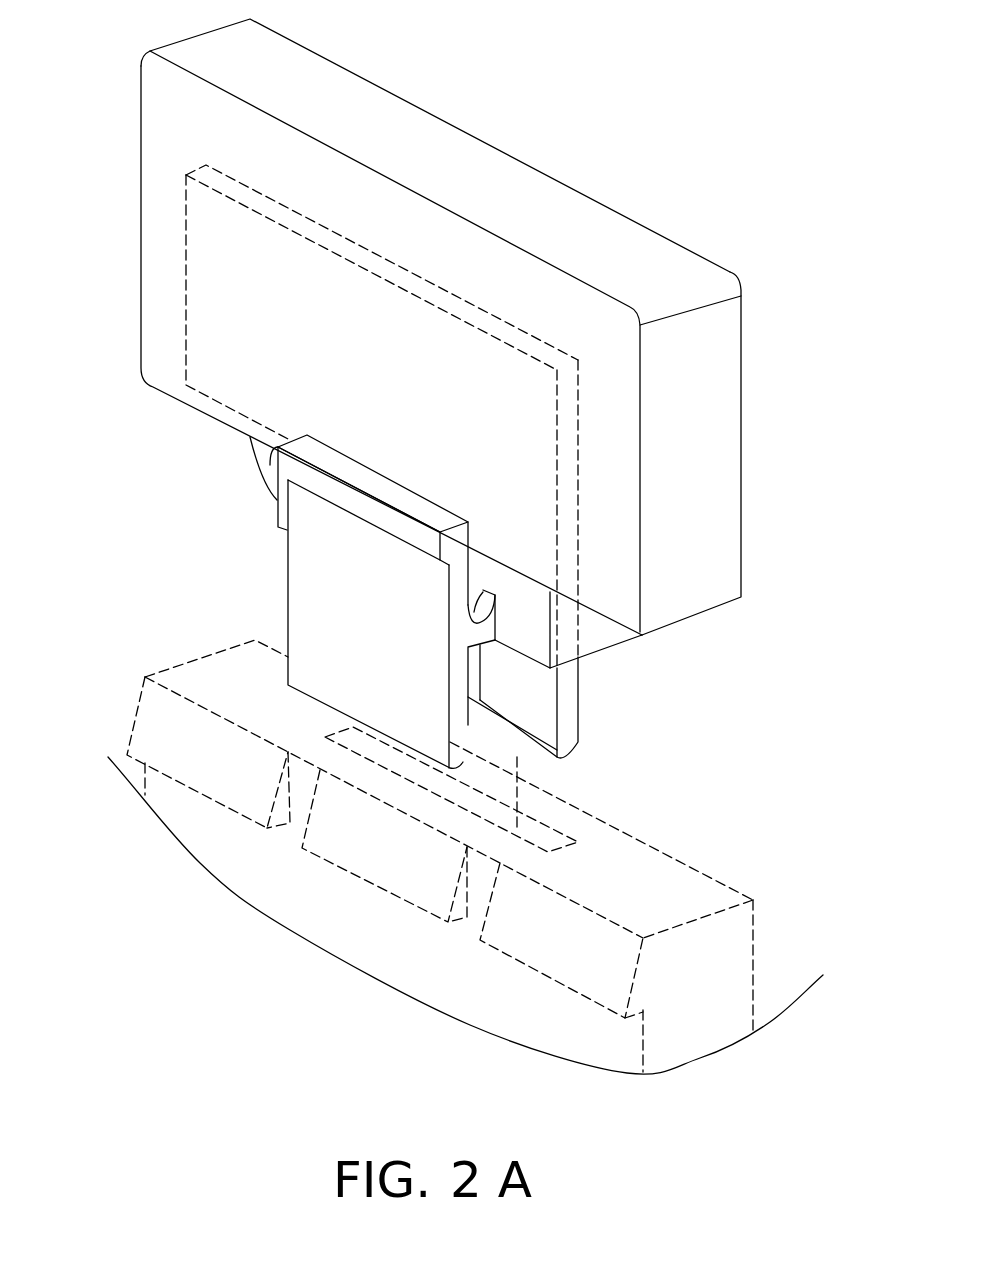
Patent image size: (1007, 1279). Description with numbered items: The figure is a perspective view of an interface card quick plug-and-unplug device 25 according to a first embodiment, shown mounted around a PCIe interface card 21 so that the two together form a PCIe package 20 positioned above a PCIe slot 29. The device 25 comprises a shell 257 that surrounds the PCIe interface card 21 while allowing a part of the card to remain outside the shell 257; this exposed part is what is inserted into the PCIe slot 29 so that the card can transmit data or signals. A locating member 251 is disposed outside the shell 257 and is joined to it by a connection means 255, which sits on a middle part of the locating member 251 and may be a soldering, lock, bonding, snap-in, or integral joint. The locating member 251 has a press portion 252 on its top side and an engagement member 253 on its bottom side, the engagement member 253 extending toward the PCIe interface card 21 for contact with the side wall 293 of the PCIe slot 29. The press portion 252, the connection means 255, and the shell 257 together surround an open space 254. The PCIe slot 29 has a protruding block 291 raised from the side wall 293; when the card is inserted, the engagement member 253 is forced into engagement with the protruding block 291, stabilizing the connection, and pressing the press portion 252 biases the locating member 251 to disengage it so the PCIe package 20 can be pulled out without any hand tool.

The PCIe package 20 is at (111, 50).
The PCIe interface card 21 is at (200, 266).
The shell 257 is at (722, 405).
The interface card quick plug-and-unplug device 25 is at (410, 601).
The locating member 251 is at (298, 595).
The press portion 252 is at (305, 472).
The engagement member 253 is at (484, 727).
The open space 254 is at (481, 565).
The connection means 255 is at (497, 625).
The PCIe slot 29 is at (465, 857).
The protruding block 291 is at (362, 862).
The side wall 293 is at (233, 852).